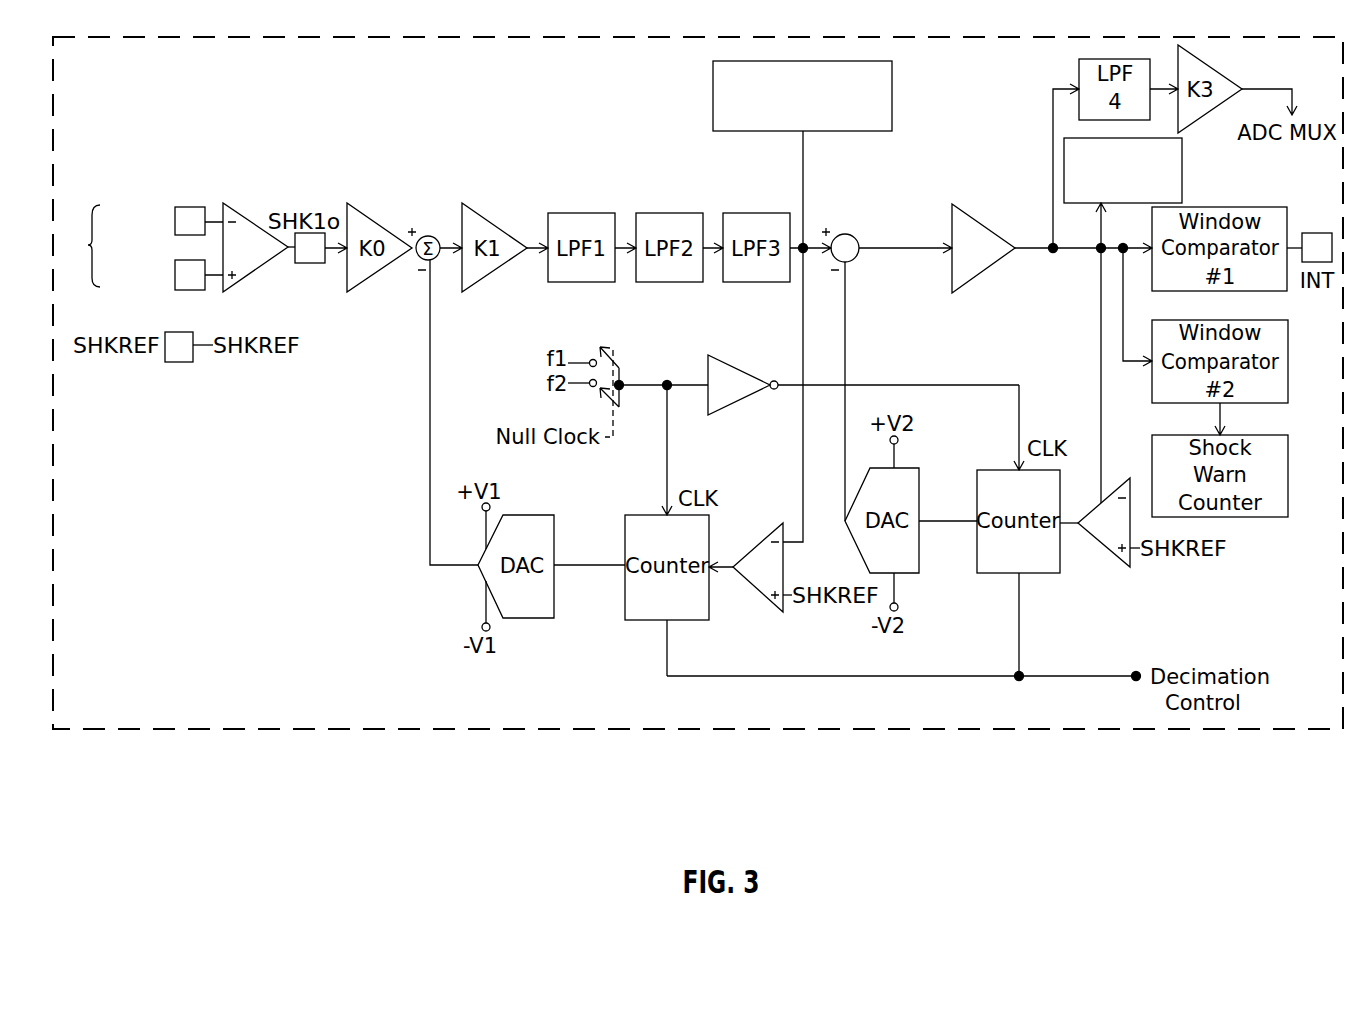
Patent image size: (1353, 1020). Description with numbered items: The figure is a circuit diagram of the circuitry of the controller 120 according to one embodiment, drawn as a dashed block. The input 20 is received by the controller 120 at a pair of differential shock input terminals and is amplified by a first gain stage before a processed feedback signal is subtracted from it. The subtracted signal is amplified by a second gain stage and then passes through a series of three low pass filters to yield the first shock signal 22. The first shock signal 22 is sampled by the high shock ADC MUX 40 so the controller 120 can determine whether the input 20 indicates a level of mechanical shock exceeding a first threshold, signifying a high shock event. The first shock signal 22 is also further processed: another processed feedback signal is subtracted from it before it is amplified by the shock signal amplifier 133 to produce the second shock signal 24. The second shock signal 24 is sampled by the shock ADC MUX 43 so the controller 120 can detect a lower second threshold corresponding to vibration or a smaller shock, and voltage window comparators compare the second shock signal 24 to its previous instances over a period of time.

The input 20 is at (141, 247).
The first shock signal 22 is at (813, 237).
The second shock signal 24 is at (1031, 256).
The high shock ADC MUX 40 is at (892, 73).
The shock ADC MUX 43 is at (1183, 172).
The shock signal amplifier 133 is at (983, 220).
The controller 120 is at (310, 730).